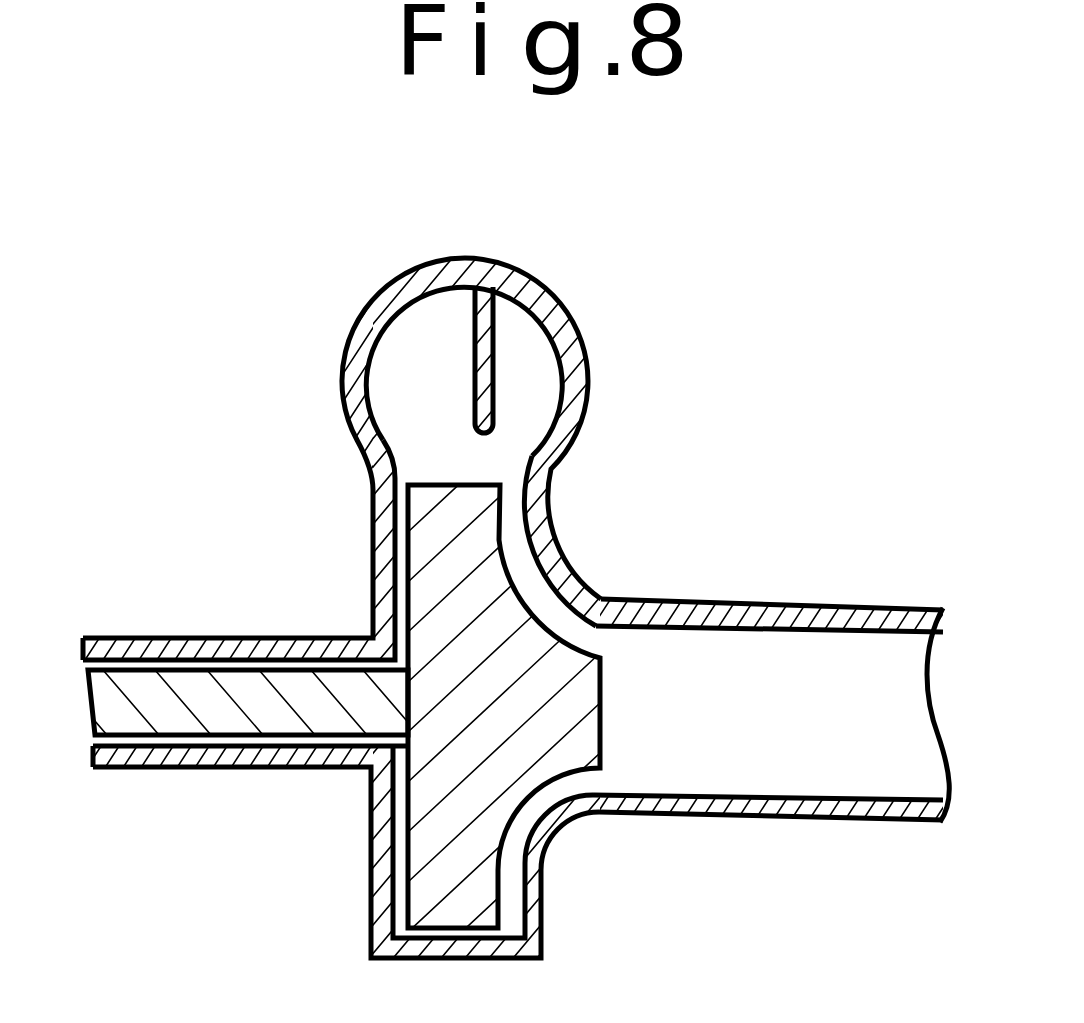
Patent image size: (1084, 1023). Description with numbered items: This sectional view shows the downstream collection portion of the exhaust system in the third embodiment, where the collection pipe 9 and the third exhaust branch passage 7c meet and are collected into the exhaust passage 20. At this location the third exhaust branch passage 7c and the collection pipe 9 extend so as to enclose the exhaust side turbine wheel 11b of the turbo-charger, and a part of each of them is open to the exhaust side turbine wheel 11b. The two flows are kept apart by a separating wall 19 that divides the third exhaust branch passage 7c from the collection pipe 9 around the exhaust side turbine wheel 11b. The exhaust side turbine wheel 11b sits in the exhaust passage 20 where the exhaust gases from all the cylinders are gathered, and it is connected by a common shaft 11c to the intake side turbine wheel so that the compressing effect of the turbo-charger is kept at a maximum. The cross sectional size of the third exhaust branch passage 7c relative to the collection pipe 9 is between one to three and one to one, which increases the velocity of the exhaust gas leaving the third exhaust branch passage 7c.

The third exhaust branch passage 7c is at (527, 352).
The collection pipe 9 is at (405, 348).
The separating wall 19 is at (493, 420).
The exhaust passage 20 is at (832, 657).
The exhaust side turbine wheel 11b is at (522, 655).
The common shaft 11c is at (240, 700).